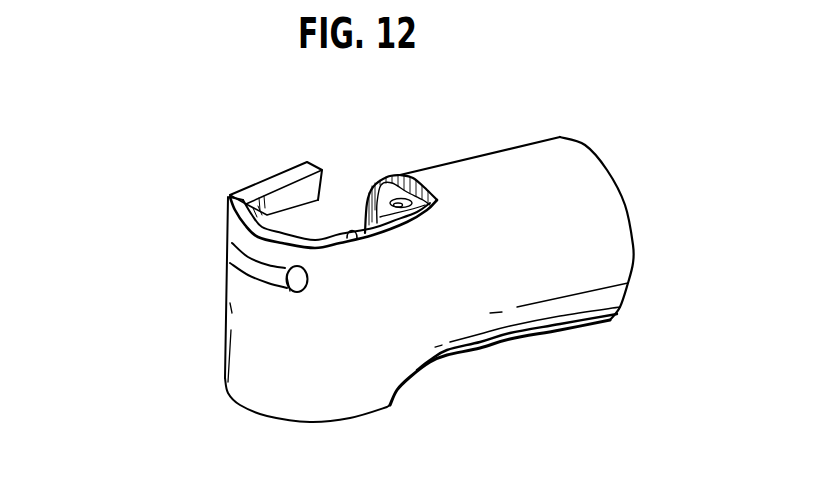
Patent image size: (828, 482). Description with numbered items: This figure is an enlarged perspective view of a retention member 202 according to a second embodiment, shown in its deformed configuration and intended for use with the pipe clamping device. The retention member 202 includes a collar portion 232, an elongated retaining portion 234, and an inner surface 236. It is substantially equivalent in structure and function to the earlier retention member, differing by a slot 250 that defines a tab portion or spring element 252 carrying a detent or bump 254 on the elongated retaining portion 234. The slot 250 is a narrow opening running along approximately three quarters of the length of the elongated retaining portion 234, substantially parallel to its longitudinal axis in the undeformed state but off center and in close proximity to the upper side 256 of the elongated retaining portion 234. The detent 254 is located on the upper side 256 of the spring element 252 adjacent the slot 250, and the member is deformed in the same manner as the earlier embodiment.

The retention member 202 is at (384, 244).
The collar portion 232 is at (553, 185).
The elongated retaining portion 234 is at (248, 363).
The inner surface 236 is at (427, 127).
The slot 250 is at (242, 260).
The spring element 252 is at (277, 203).
The detent 254 is at (240, 215).
The upper side 256 is at (352, 240).